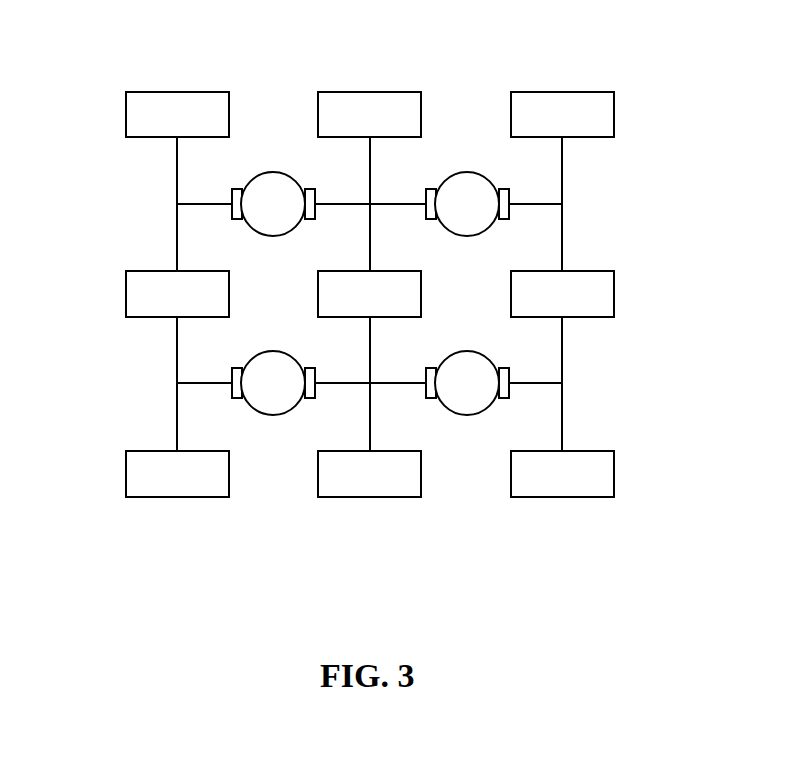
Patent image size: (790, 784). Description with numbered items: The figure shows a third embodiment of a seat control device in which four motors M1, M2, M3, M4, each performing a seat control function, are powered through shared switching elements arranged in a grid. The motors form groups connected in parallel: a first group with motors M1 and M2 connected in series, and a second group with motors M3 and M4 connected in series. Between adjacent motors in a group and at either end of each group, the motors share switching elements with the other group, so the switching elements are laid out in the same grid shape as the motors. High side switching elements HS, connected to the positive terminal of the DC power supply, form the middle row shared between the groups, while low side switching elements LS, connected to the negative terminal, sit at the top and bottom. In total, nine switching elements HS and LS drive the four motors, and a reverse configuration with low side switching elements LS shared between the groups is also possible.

The low side switching element LS is at (163, 92).
The high side switching element HS is at (126, 292).
The motor M1 is at (273, 204).
The motor M2 is at (466, 204).
The motor M3 is at (273, 383).
The motor M4 is at (466, 383).